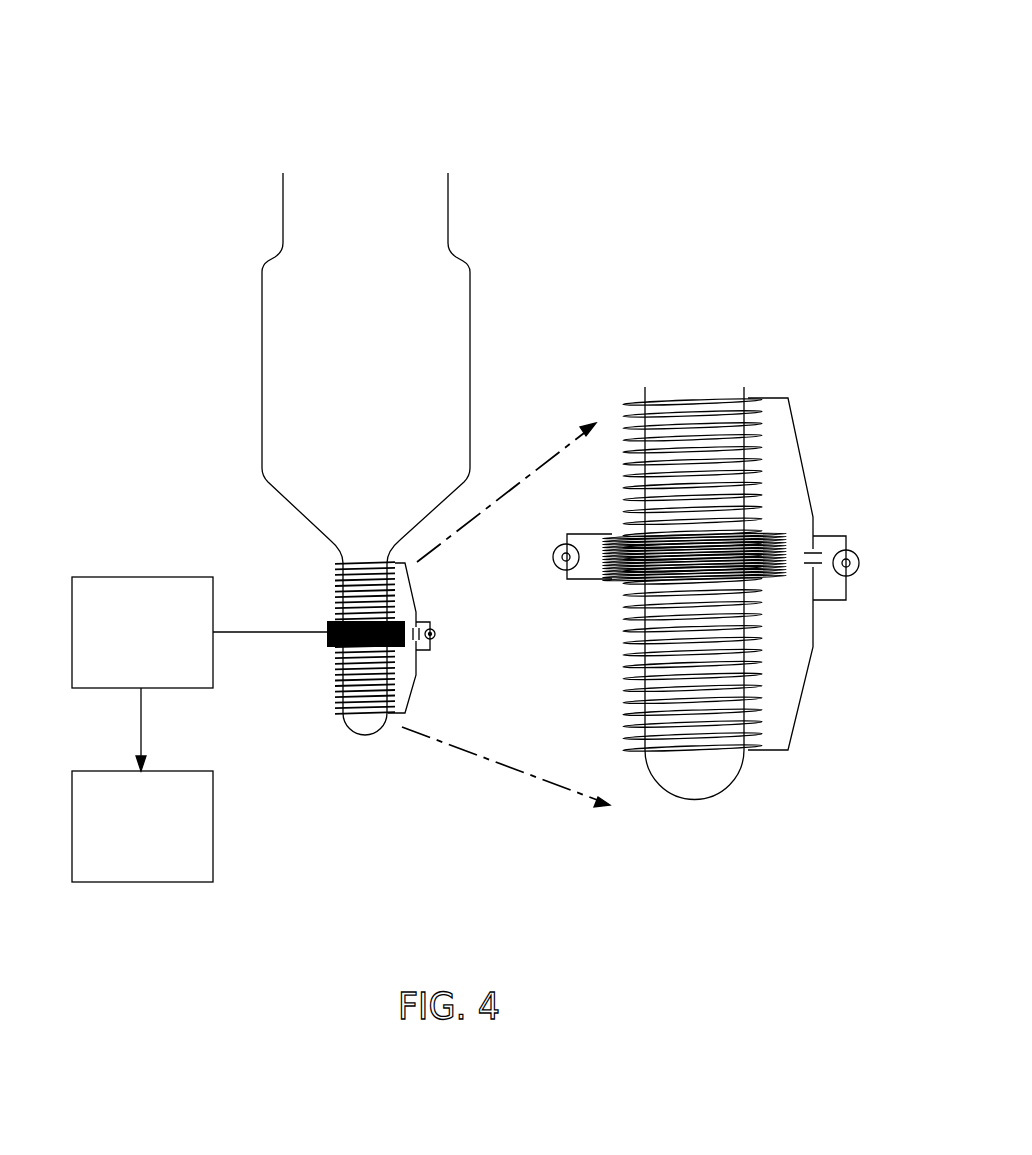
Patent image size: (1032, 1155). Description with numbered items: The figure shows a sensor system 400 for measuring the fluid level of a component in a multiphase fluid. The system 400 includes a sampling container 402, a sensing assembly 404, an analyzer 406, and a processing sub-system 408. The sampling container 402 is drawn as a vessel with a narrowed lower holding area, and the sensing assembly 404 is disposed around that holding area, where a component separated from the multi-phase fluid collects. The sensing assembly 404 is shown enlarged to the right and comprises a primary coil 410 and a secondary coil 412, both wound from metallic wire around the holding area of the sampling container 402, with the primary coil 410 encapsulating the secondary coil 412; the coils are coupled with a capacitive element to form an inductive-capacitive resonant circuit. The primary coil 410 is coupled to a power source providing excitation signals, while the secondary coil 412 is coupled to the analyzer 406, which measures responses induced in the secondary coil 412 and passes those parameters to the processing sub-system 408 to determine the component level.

The sensor system 400 is at (738, 86).
The sampling container 402 is at (262, 427).
The sensing assembly 404 is at (335, 703).
The analyzer 406 is at (161, 645).
The processing sub-system 408 is at (161, 838).
The primary coil 410 is at (717, 593).
The secondary coil 412 is at (580, 580).